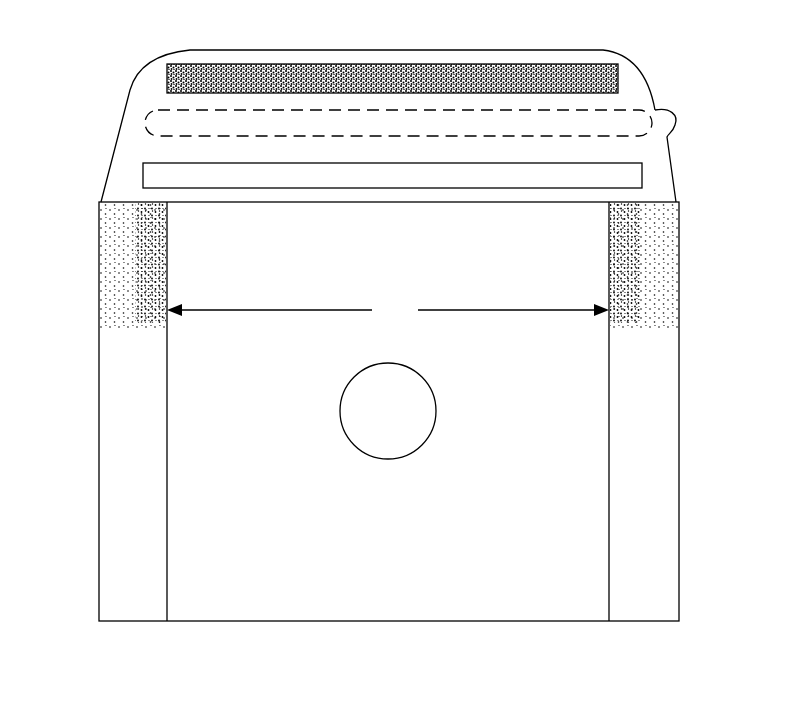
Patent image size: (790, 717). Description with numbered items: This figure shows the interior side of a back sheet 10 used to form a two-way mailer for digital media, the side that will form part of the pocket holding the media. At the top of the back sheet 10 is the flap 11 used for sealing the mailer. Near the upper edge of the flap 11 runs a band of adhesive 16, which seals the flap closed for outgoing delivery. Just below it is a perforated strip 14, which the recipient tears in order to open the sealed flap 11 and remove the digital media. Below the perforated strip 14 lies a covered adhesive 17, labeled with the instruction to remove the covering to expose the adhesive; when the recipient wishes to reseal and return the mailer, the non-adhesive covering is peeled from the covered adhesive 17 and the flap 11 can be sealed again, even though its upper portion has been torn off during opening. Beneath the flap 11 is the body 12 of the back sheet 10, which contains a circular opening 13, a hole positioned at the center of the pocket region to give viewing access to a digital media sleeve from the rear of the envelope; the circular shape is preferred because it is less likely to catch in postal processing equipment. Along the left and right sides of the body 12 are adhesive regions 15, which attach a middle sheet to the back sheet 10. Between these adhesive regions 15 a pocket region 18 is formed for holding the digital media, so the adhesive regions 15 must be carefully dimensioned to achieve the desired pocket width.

The back sheet 10 is at (678, 57).
The flap 11 is at (130, 147).
The body 12 is at (547, 605).
The circular opening 13 is at (437, 412).
The perforated strip 14 is at (628, 123).
The adhesive regions 15 is at (113, 352).
The adhesive 16 is at (187, 75).
The covered adhesive 17 is at (153, 180).
The pocket region 18 is at (388, 310).